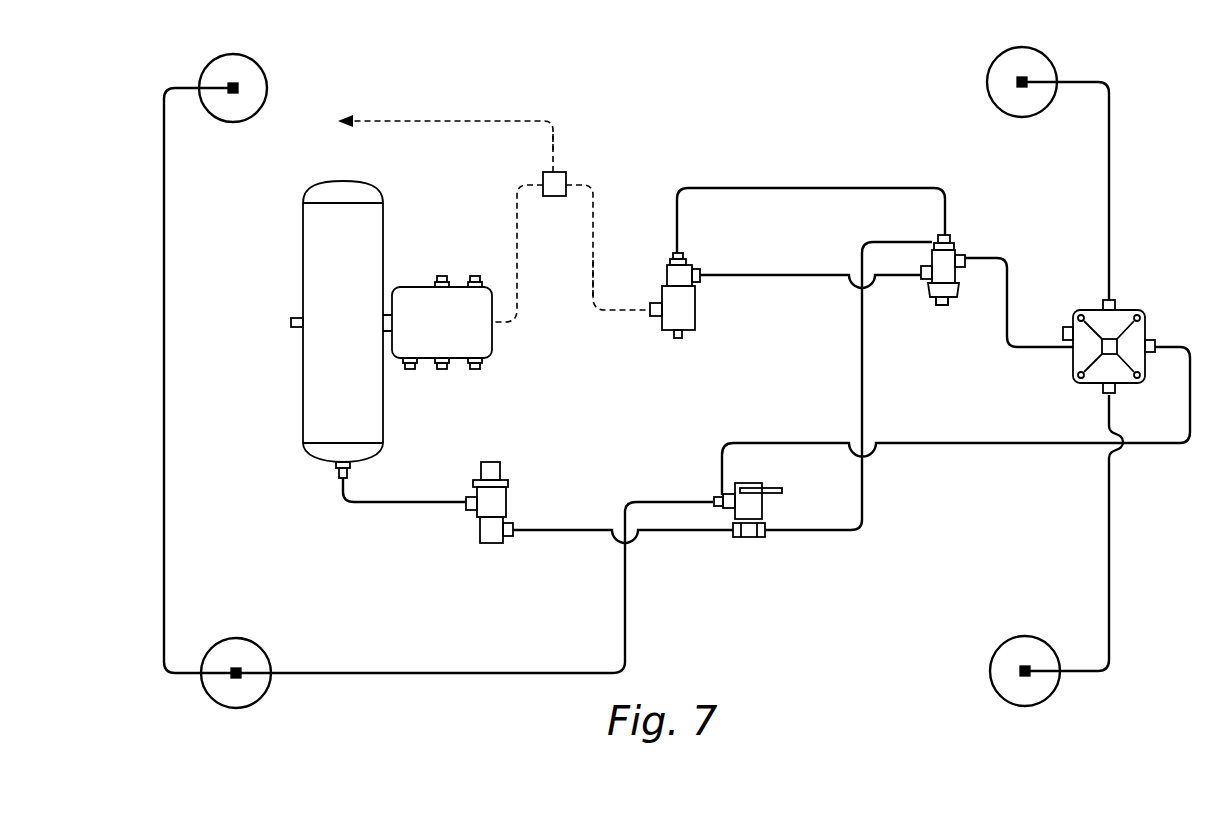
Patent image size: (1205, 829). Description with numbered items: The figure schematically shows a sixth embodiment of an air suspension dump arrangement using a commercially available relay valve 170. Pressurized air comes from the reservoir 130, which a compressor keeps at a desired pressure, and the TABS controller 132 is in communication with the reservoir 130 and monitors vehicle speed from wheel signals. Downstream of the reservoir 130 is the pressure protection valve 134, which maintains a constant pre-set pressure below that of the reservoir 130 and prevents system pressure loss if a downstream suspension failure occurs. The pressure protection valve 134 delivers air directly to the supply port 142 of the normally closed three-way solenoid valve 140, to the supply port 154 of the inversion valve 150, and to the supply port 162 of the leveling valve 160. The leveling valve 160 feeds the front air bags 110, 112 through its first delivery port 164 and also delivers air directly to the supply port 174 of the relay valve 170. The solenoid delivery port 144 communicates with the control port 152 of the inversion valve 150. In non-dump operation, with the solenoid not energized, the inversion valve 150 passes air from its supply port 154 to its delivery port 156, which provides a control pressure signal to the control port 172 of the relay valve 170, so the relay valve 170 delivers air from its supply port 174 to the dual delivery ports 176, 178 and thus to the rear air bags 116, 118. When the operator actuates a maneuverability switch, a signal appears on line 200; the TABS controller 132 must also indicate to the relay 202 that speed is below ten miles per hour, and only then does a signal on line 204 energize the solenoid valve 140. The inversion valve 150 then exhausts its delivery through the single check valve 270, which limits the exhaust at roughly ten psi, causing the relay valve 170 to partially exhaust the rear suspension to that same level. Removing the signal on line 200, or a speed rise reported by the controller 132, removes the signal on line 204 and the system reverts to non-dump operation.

The front air bag 110 is at (253, 73).
The front air bag 112 is at (250, 690).
The rear air bag 116 is at (1040, 67).
The rear air bag 118 is at (1043, 685).
The reservoir 130 is at (368, 250).
The TABS controller 132 is at (448, 348).
The pressure protection valve 134 is at (497, 500).
The three-way solenoid valve 140 is at (675, 311).
The supply port 142 is at (684, 263).
The delivery port 144 is at (700, 278).
The inversion valve 150 is at (950, 281).
The control port 152 is at (925, 280).
The supply port 154 is at (936, 237).
The delivery port 156 is at (966, 262).
The leveling valve 160 is at (752, 511).
The supply port 162 is at (746, 538).
The first delivery port 164 is at (724, 491).
The relay valve 170 is at (1105, 325).
The control port 172 is at (1062, 350).
The supply port 174 is at (1156, 340).
The first delivery port 176 is at (1104, 305).
The second delivery port 178 is at (1115, 395).
The line 200 is at (553, 153).
The relay 202 is at (543, 183).
The line 204 is at (593, 282).
The check valve 270 is at (946, 322).